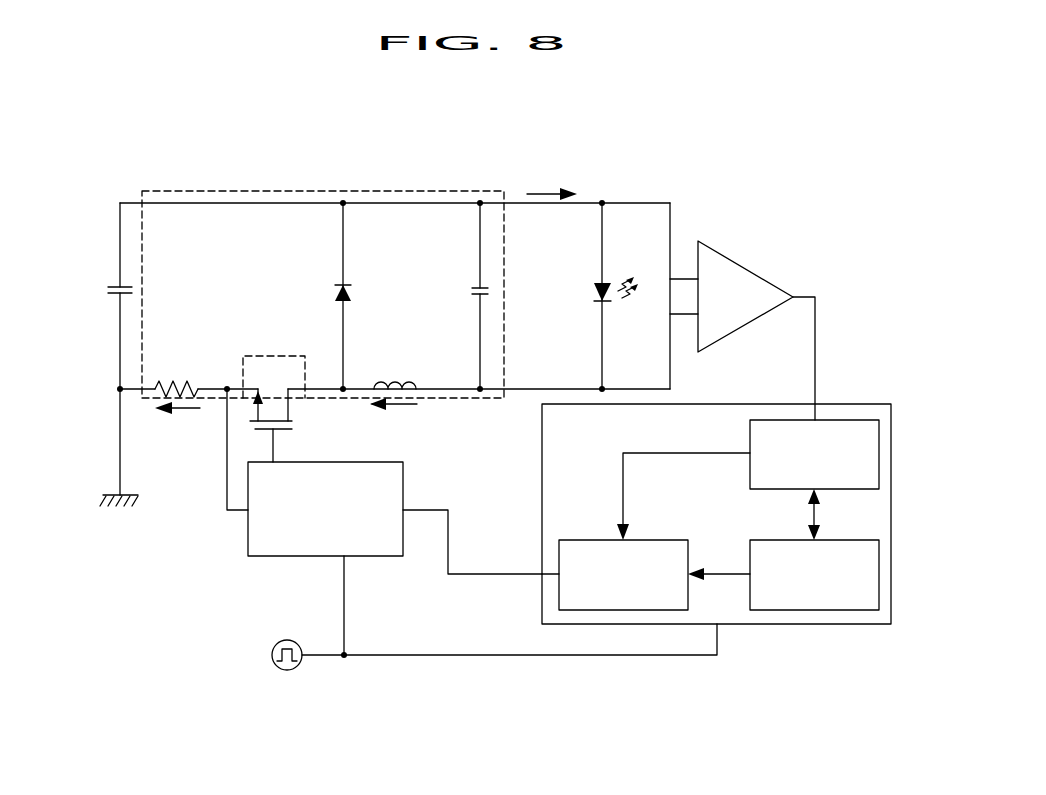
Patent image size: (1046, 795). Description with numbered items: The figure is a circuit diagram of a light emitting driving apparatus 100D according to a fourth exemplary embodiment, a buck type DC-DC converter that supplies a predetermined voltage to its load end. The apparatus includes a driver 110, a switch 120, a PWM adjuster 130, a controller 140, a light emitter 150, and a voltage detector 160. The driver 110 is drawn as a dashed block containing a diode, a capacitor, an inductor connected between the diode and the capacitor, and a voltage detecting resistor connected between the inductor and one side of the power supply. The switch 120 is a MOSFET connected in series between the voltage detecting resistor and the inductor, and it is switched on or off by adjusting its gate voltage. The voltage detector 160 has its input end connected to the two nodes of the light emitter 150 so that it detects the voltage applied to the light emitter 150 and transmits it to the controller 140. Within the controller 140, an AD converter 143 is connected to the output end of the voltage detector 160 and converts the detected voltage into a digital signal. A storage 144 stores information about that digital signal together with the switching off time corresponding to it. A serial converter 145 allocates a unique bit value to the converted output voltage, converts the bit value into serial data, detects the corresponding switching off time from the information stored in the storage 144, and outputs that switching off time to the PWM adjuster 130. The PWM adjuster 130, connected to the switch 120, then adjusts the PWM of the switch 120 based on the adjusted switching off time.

The light emitting driving apparatus 100D is at (460, 116).
The driver 110 is at (305, 190).
The switch 120 is at (295, 418).
The PWM adjuster 130 is at (273, 558).
The controller 140 is at (862, 403).
The AD converter 143 is at (879, 455).
The storage 144 is at (879, 569).
The serial converter 145 is at (583, 540).
The light emitter 150 is at (613, 280).
The voltage detector 160 is at (747, 265).